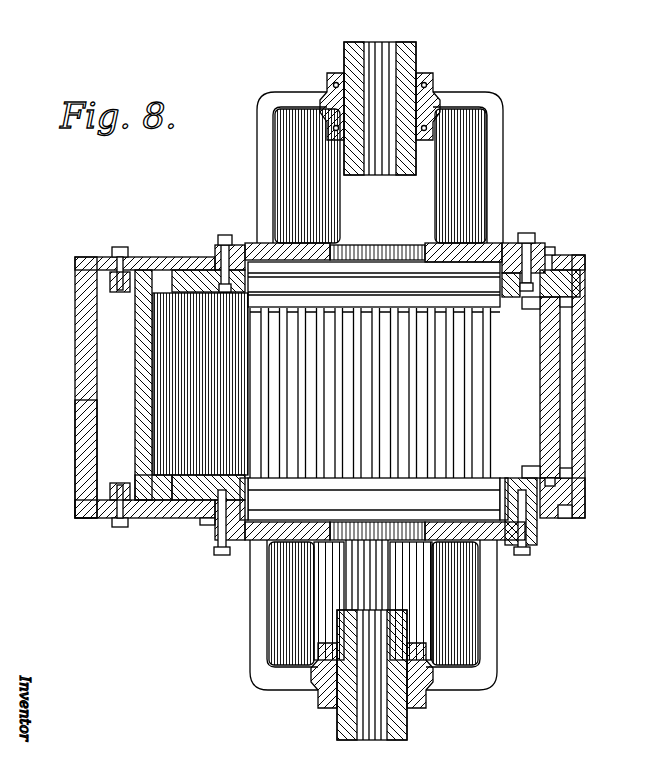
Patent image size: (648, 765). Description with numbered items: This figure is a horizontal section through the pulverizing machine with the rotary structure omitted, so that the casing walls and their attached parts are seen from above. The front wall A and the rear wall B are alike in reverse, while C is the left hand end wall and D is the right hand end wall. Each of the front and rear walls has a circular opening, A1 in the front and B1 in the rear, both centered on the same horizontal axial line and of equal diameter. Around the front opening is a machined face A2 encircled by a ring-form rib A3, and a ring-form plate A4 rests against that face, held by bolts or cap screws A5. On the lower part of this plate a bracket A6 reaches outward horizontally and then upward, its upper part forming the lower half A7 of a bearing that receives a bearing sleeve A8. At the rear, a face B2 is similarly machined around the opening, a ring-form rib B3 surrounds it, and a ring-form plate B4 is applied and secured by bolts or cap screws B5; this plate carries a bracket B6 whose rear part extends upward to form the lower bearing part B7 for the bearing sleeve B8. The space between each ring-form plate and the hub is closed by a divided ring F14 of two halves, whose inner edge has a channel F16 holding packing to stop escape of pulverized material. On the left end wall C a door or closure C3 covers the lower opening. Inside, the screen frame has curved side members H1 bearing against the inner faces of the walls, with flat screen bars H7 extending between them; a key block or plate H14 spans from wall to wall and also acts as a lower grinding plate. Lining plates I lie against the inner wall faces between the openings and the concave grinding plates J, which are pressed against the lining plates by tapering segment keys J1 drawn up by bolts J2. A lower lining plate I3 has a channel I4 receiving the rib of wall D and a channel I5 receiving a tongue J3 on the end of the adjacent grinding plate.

The rear wall B is at (88, 257).
The circular opening B1 is at (228, 240).
The machined face B2 is at (225, 236).
The ring-form rib B3 is at (190, 280).
The ring-form plate B4 is at (216, 254).
The bolts or cap screws B5 is at (222, 248).
The bracket B6 is at (257, 128).
The lower bearing member B7 is at (327, 84).
The bearing sleeve B8 is at (344, 54).
The left hand end wall C is at (80, 326).
The door or closure C3 is at (76, 393).
The lining plate I is at (180, 262).
The lining plate I3 is at (572, 276).
The channel I4 is at (578, 270).
The channel I5 is at (550, 298).
The concave grinding plate J is at (140, 356).
The segment key J1 is at (100, 292).
The bolts J2 is at (118, 246).
The tongue J3 is at (540, 302).
The curved side member H1 is at (374, 391).
The screen bars H7 is at (392, 421).
The key block or plate H14 is at (185, 425).
The divided ring F14 is at (416, 562).
The channel F16 is at (365, 246).
The right hand end wall D is at (585, 366).
The circular opening A1 is at (243, 500).
The machined face A2 is at (237, 545).
The ring-form rib A3 is at (215, 505).
The ring-form plate A4 is at (272, 528).
The bolts or cap screws A5 is at (222, 556).
The bracket A6 is at (296, 683).
The lower bearing member A7 is at (426, 705).
The bearing sleeve A8 is at (345, 740).